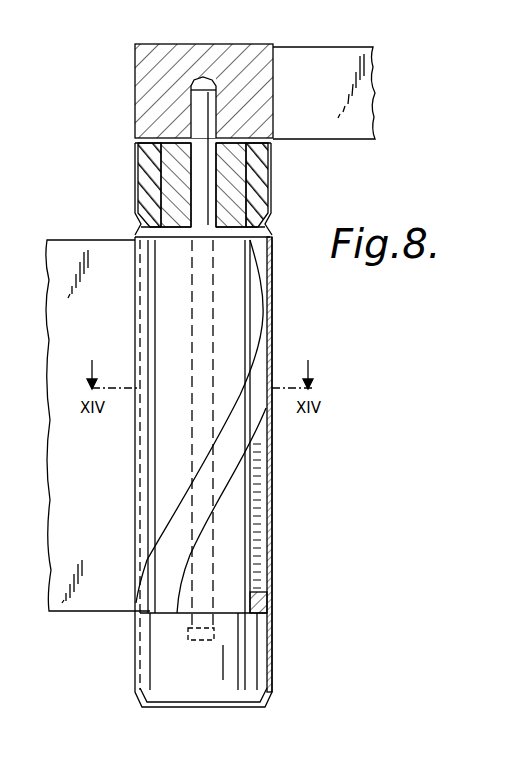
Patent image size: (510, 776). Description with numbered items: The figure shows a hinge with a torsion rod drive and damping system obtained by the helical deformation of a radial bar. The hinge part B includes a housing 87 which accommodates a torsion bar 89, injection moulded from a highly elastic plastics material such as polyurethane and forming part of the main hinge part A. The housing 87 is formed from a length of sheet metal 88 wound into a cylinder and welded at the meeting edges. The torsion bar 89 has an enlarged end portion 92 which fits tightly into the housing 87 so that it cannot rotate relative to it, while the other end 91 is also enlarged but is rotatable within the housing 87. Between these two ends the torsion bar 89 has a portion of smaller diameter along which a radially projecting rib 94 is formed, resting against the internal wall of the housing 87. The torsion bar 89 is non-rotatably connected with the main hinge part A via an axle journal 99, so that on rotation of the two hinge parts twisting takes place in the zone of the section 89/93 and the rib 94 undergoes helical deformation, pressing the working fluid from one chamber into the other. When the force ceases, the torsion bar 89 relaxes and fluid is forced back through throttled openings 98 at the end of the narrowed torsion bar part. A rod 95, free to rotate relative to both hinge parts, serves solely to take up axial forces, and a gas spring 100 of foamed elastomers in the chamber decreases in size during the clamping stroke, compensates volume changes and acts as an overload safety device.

The main hinge part A is at (240, 45).
The hinge part B is at (270, 657).
The rod 95 is at (203, 108).
The other end of torsion bar 91 is at (255, 182).
The axle journal 99 is at (236, 203).
The throttled openings 98 is at (148, 243).
The torsion bar 89 is at (238, 322).
The radially projecting rib 94 is at (228, 420).
The length of sheet metal 88 is at (140, 474).
The housing 87 is at (272, 462).
The section of torsion bar 93 is at (242, 535).
The gas spring 100 is at (267, 605).
The enlarged end portion 92 is at (229, 682).